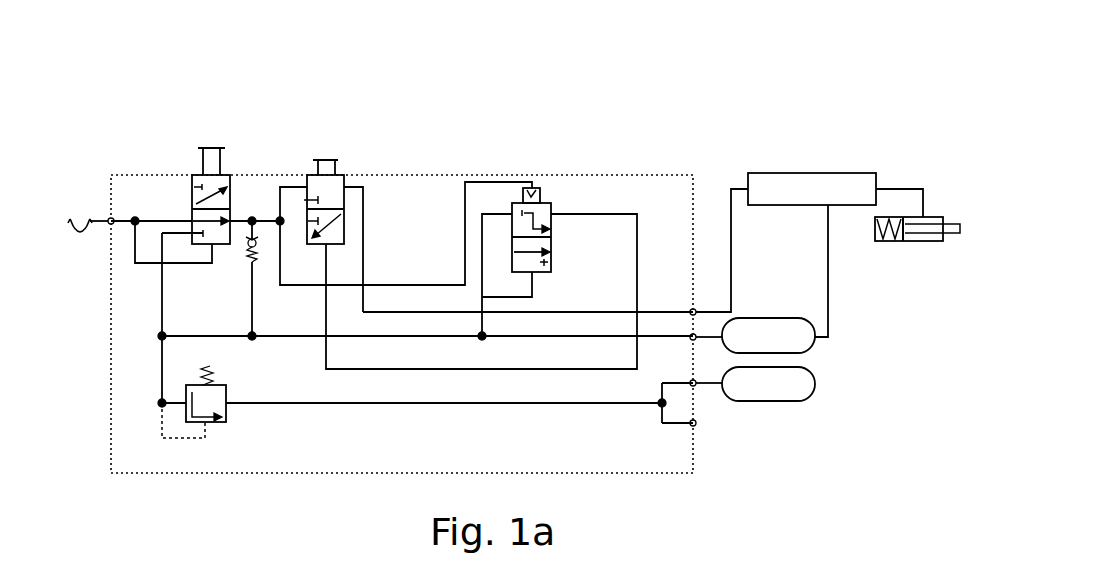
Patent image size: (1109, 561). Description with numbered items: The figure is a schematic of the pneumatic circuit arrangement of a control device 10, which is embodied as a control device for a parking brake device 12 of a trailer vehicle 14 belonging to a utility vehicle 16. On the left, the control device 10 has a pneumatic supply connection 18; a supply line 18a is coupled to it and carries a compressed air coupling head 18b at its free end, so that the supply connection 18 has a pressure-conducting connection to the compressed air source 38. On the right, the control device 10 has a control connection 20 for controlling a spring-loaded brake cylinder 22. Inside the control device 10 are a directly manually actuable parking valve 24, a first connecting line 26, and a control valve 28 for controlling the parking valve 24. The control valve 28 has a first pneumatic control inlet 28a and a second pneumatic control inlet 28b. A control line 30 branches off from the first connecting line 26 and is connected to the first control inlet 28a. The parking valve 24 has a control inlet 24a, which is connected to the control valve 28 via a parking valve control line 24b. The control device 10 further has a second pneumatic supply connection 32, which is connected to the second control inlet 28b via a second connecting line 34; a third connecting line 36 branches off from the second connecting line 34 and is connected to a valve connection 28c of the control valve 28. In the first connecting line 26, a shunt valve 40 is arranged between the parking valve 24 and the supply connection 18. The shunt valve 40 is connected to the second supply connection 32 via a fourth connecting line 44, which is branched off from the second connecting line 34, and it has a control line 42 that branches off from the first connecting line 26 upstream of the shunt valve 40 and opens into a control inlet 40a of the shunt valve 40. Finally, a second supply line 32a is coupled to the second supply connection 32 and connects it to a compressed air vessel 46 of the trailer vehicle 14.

The control device 10 is at (666, 174).
The parking brake device 12 is at (812, 91).
The trailer vehicle 14 is at (793, 341).
The utility vehicle 16 is at (92, 407).
The pneumatic supply connection 18 is at (78, 235).
The supply line 18a is at (108, 224).
The compressed air coupling head 18b is at (80, 230).
The control connection 20 is at (694, 309).
The spring-loaded brake cylinder 22 is at (905, 243).
The parking valve 24 is at (342, 176).
The control inlet 24a is at (330, 246).
The parking valve control line 24b is at (325, 355).
The first connecting line 26 is at (163, 220).
The control valve 28 is at (575, 176).
The first pneumatic control inlet 28a is at (538, 188).
The second pneumatic control inlet 28b is at (534, 273).
The valve connection 28c is at (512, 213).
The control line 30 is at (390, 284).
The second pneumatic supply connection 32 is at (695, 340).
The second supply line 32a is at (724, 320).
The second connecting line 34 is at (493, 371).
The third connecting line 36 is at (488, 263).
The compressed air source 38 is at (92, 200).
The shunt valve 40 is at (231, 178).
The control inlet 40a is at (214, 246).
The control line 42 is at (150, 265).
The fourth connecting line 44 is at (213, 335).
The compressed air vessel 46 is at (795, 342).